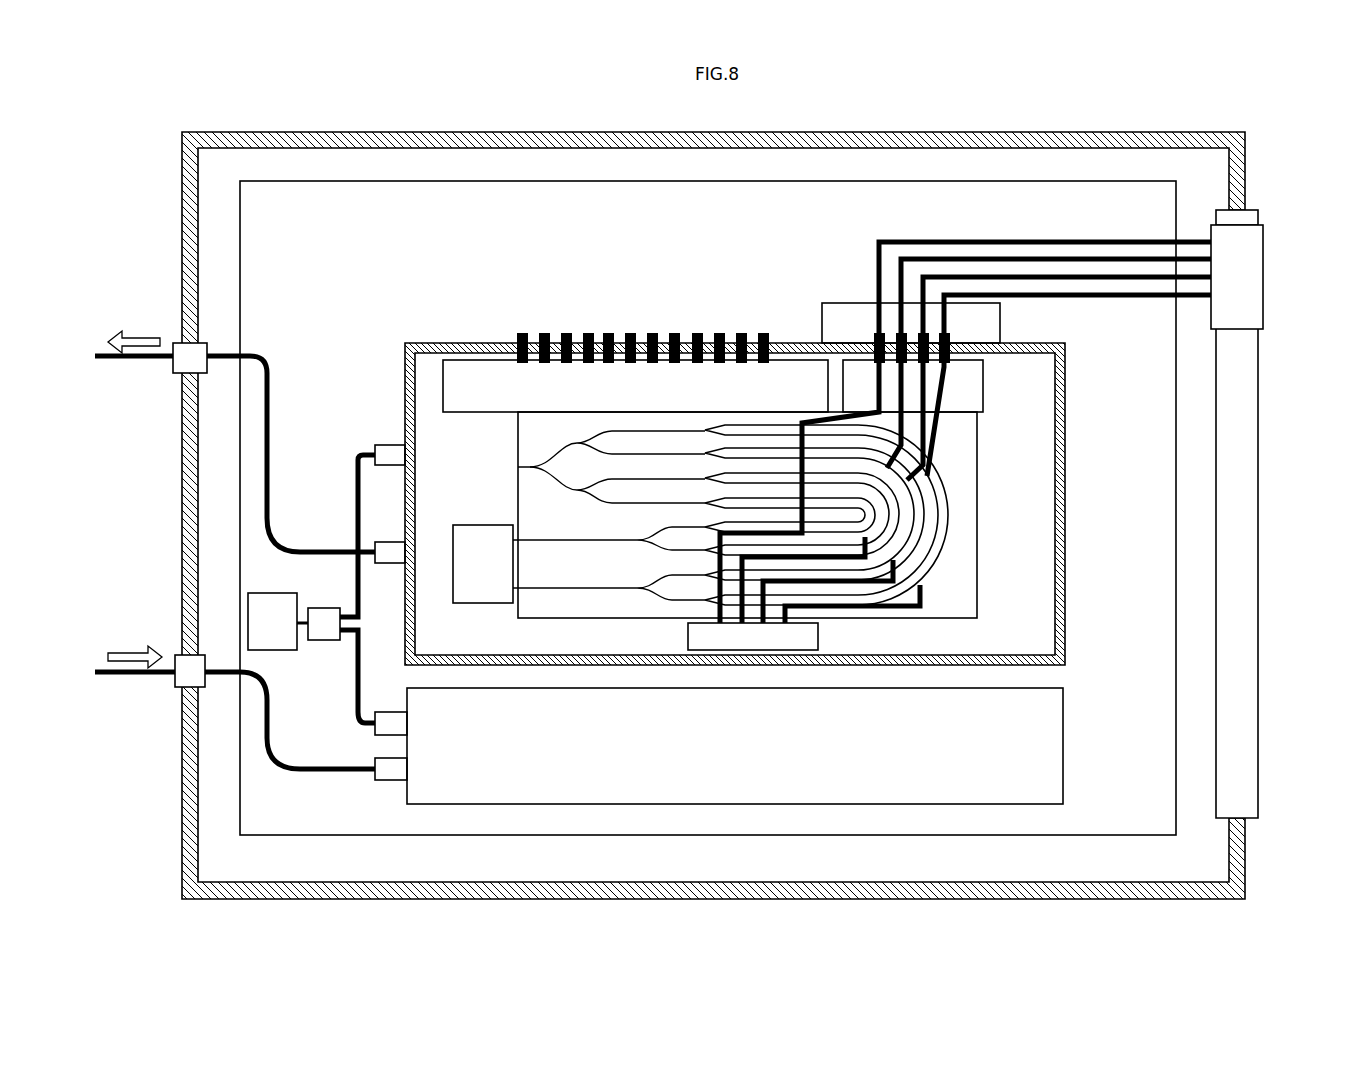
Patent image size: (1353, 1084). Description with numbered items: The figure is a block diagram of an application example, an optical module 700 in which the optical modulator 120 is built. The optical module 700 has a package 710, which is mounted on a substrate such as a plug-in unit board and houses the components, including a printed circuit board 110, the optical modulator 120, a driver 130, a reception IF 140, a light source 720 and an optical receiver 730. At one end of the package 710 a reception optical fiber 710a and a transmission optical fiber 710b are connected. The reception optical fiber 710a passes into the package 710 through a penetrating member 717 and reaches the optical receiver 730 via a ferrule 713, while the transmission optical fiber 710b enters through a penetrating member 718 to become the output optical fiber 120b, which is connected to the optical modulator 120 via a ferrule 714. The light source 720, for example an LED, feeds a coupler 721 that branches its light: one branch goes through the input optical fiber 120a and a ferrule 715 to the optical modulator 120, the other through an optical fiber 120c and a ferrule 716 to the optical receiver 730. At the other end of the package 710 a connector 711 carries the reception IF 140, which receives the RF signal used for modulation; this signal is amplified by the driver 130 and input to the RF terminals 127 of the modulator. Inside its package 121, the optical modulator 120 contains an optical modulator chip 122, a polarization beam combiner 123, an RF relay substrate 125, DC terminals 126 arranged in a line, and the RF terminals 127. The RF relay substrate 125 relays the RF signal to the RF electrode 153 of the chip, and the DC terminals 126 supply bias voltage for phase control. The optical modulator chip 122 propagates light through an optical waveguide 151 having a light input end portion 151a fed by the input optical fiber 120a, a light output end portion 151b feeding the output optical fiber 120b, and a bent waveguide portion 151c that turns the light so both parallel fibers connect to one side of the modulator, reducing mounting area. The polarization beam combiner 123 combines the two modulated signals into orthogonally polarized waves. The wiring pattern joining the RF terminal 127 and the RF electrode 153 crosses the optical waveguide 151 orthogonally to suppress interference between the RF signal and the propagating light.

The optical module 700 is at (1233, 106).
The package 710 is at (1178, 132).
The printed circuit board 110 is at (1108, 181).
The optical modulator 120 is at (773, 473).
The package 121 is at (1068, 378).
The optical modulator chip 122 is at (978, 488).
The polarization beam combiner 123 is at (488, 525).
The RF relay substrate 125 is at (985, 380).
The DC terminal 126 is at (588, 333).
The RF terminal 127 is at (879, 333).
The driver 130 is at (848, 303).
The reception IF 140 is at (1264, 280).
The optical waveguide 151 is at (520, 460).
The light input end portion 151a is at (530, 467).
The light output end portion 151b is at (513, 540).
The bent waveguide portion 151c is at (945, 513).
The RF electrode 153 is at (836, 585).
The connector 711 is at (1260, 340).
The ferrule 713 is at (386, 780).
The ferrule 714 is at (386, 542).
The ferrule 715 is at (386, 445).
The ferrule 716 is at (386, 712).
The penetrating member 717 is at (175, 660).
The penetrating member 718 is at (178, 343).
The reception optical fiber 710a is at (150, 688).
The transmission optical fiber 710b is at (158, 374).
The light source 720 is at (272, 593).
The coupler 721 is at (323, 608).
The input optical fiber 120a is at (355, 465).
The output optical fiber 120b is at (272, 503).
The optical fiber 120c is at (356, 711).
The optical receiver 730 is at (1065, 746).